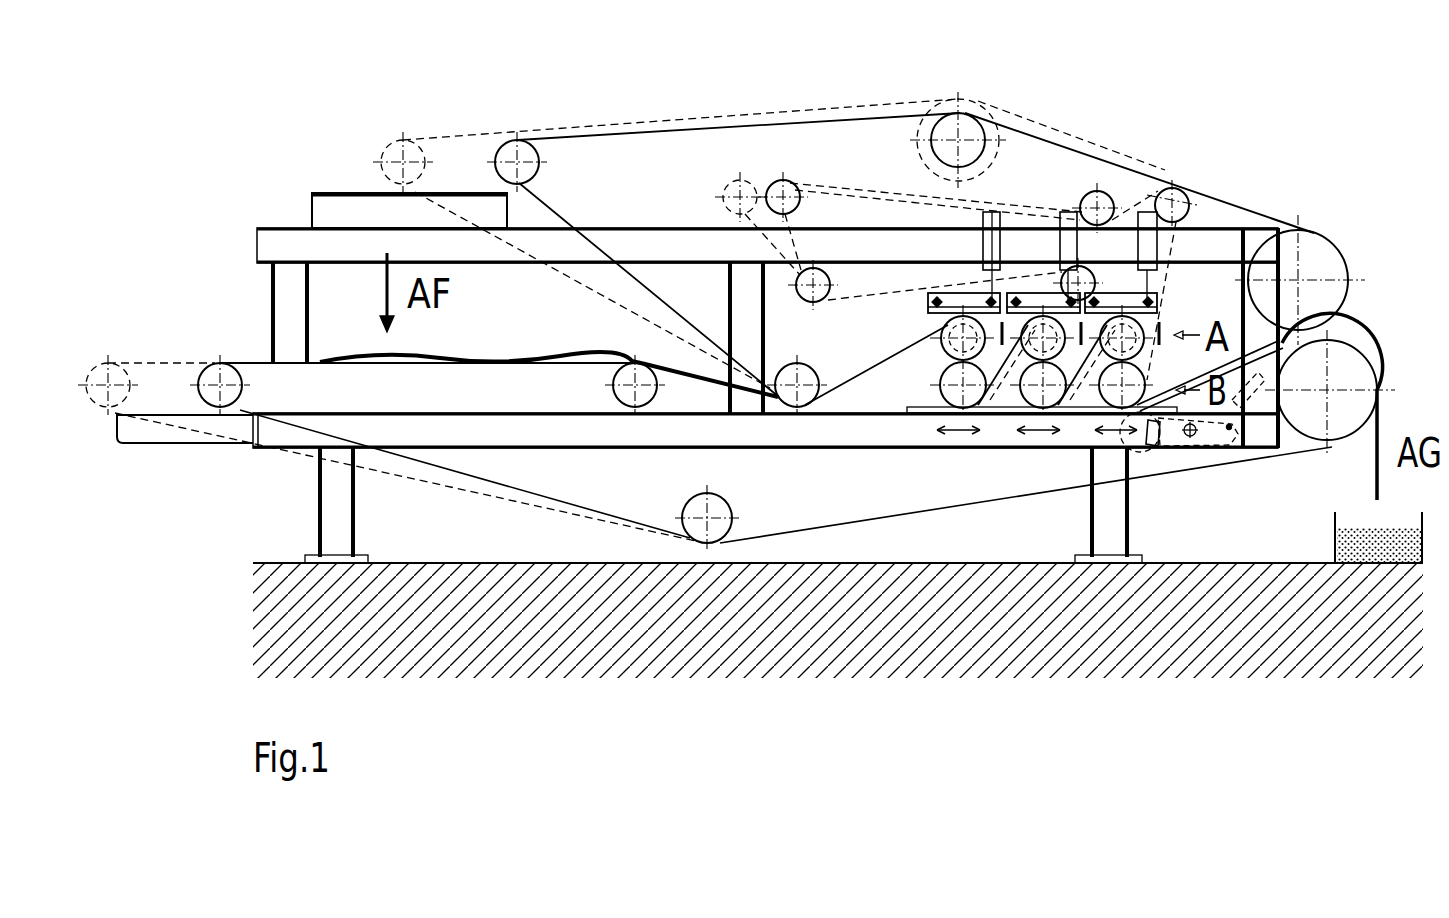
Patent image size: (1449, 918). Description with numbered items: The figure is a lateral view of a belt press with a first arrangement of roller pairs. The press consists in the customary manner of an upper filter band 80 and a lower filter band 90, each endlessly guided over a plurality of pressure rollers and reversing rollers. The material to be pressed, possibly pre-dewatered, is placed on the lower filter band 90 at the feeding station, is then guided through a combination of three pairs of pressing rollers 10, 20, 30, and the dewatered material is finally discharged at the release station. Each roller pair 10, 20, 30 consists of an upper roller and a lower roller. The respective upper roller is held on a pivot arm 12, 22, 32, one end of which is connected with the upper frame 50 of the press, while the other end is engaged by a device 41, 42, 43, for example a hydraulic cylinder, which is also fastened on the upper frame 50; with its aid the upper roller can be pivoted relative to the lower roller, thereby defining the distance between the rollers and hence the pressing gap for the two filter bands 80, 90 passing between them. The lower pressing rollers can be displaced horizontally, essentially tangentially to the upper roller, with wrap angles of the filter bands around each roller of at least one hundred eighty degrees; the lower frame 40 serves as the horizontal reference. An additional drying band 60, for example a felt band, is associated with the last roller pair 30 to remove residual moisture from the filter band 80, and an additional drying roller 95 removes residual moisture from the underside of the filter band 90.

The first pressing roller pair 10 is at (965, 462).
The pivot arm 12 is at (945, 298).
The second pressing roller pair 20 is at (1045, 462).
The pivot arm 22 is at (1046, 316).
The third pressing roller pair 30 is at (1118, 462).
The pivot arm 32 is at (1128, 300).
The frame 40 is at (913, 432).
The device 41 is at (991, 212).
The device 42 is at (1071, 212).
The device 43 is at (1165, 190).
The upper frame 50 is at (698, 247).
The drying band 60 is at (840, 185).
The upper filter band 80 is at (918, 337).
The lower filter band 90 is at (888, 355).
The drying roller 95 is at (1153, 445).